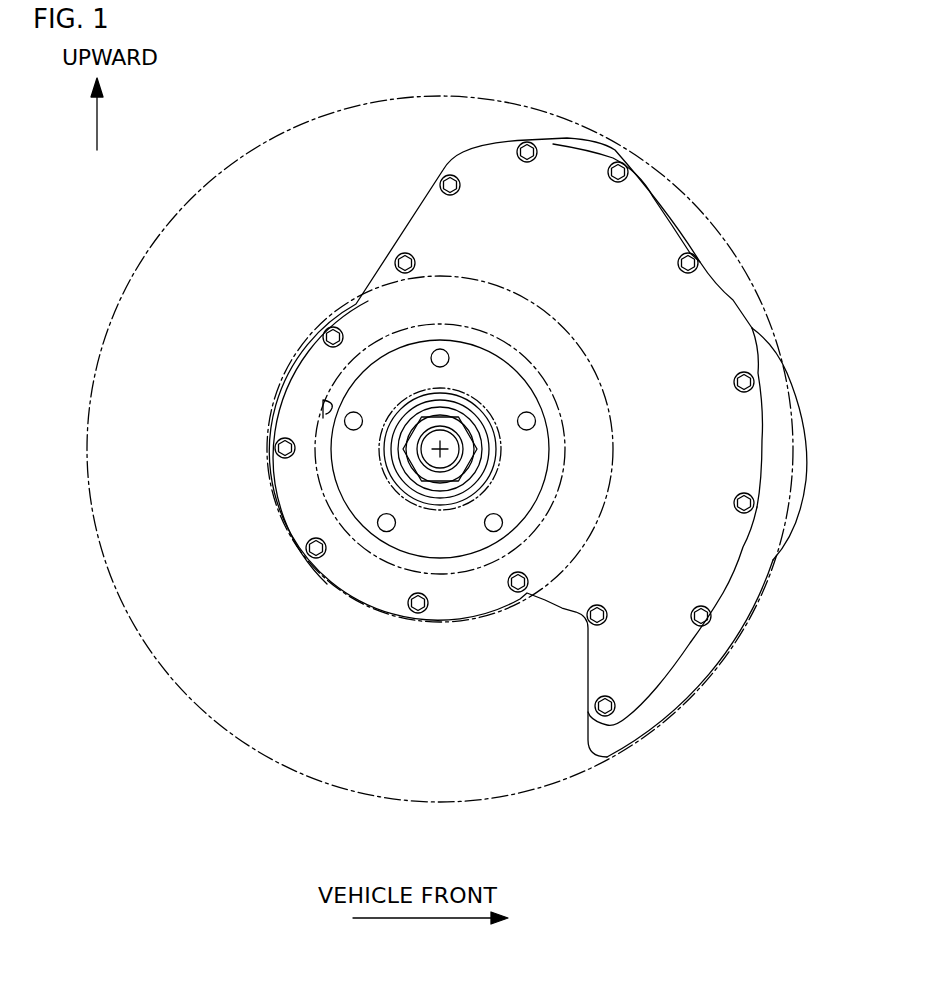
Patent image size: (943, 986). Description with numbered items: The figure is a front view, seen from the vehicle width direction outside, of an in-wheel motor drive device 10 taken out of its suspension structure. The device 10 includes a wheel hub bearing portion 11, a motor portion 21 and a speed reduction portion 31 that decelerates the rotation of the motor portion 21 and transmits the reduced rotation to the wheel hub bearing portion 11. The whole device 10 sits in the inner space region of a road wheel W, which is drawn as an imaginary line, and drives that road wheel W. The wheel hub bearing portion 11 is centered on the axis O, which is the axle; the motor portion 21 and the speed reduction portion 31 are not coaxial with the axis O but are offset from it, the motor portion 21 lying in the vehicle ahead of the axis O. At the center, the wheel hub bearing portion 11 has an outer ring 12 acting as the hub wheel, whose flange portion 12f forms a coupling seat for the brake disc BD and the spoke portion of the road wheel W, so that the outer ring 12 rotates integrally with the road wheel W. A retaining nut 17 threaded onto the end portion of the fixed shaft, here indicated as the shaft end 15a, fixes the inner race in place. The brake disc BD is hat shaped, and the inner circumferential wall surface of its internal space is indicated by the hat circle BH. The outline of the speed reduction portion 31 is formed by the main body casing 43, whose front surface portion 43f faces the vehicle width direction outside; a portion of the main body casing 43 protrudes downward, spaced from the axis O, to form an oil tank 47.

The in-wheel motor drive device 10 is at (421, 152).
The speed reduction portion 31 is at (425, 228).
The wheel hub bearing portion 11 is at (373, 353).
The outer ring 12 is at (440, 507).
The flange portion 12f is at (407, 540).
The retaining nut 17 is at (405, 452).
The axle end 15a is at (418, 462).
The axis O is at (437, 448).
The brake disc BD is at (300, 370).
The hat circle BH is at (321, 398).
The main body casing 43 is at (717, 305).
The front surface portion 43f is at (697, 553).
The motor portion 21 is at (797, 424).
The oil tank 47 is at (643, 721).
The road wheel W is at (388, 801).